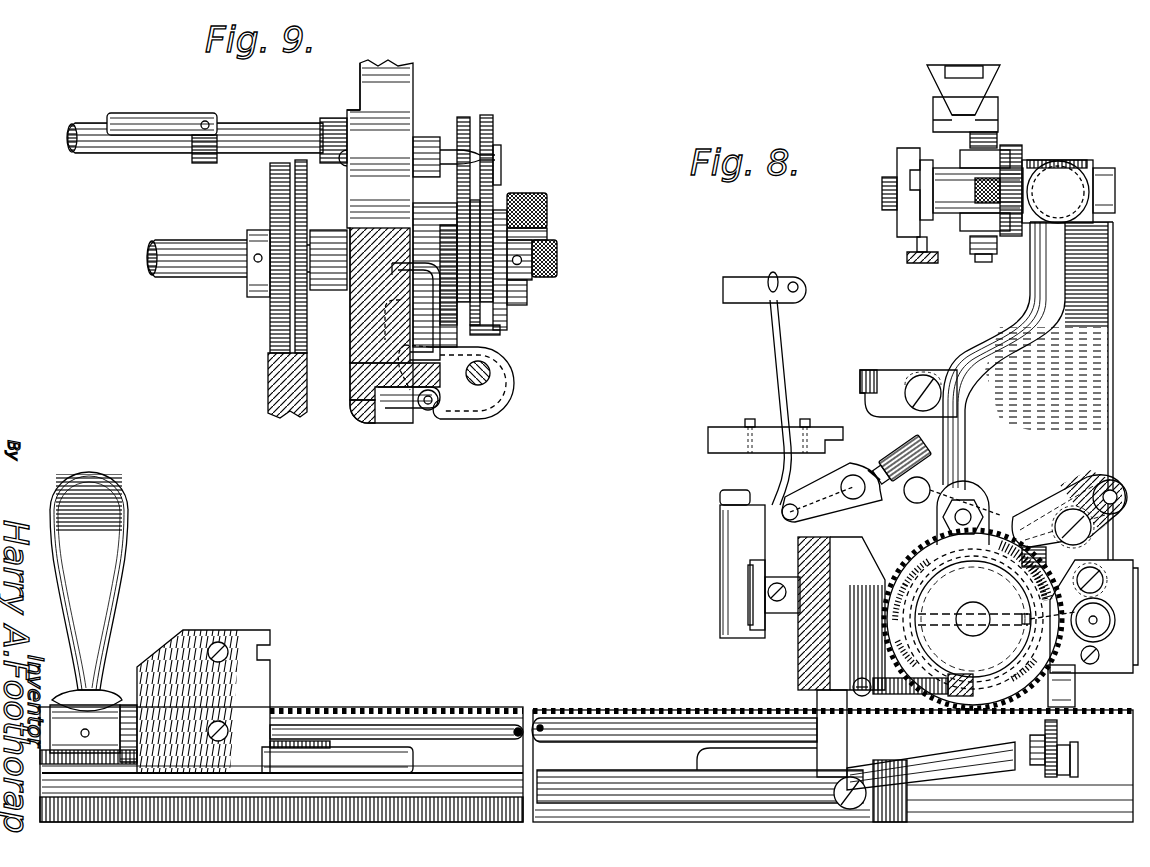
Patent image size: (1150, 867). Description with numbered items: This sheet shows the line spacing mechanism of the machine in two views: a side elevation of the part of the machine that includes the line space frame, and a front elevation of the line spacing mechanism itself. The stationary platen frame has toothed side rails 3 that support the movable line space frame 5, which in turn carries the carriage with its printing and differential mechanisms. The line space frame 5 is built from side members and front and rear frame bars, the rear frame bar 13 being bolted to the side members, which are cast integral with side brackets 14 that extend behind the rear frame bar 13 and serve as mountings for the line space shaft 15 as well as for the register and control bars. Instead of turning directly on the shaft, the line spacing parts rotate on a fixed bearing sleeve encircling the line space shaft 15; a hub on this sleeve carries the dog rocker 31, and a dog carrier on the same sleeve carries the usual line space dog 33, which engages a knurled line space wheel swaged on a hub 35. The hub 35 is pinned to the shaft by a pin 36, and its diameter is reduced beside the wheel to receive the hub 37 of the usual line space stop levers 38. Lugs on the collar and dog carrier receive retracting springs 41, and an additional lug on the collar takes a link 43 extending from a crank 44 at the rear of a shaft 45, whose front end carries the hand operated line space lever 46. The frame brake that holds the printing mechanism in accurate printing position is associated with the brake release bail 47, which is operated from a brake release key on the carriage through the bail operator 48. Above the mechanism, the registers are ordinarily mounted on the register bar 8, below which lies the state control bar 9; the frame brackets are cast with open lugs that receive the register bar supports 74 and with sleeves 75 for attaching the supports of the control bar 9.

In FIG. 9, the side rail 3 is at (268, 392).
In FIG. 9, the line space frame 5 is at (390, 395).
In FIG. 8, the line space frame 5 is at (300, 745).
In FIG. 8, the register bar 8 is at (985, 76).
In FIG. 8, the state control bar 9 is at (897, 166).
In FIG. 8, the rear frame bar 13 is at (832, 560).
In FIG. 9, the side bracket 14 is at (413, 72).
In FIG. 8, the side bracket 14 is at (986, 391).
In FIG. 9, the line space shaft 15 is at (182, 270).
In FIG. 8, the line space shaft 15 is at (968, 610).
In FIG. 9, the dog rocker 31 is at (462, 117).
In FIG. 8, the dog rocker 31 is at (1072, 487).
In FIG. 9, the line space dog 33 is at (490, 115).
In FIG. 8, the line space dog 33 is at (1102, 450).
In FIG. 9, the hub 35 is at (520, 245).
In FIG. 8, the hub 35 is at (945, 585).
In FIG. 9, the pin 36 is at (522, 265).
In FIG. 8, the pin 36 is at (1022, 626).
In FIG. 8, the hub of the line space stop levers 37 is at (905, 588).
In FIG. 8, the line space stop lever 38 is at (1094, 616).
In FIG. 8, the retracting spring 41 is at (900, 700).
In FIG. 9, the link 43 is at (365, 358).
In FIG. 8, the link 43 is at (1076, 692).
In FIG. 8, the crank 44 is at (1045, 770).
In FIG. 9, the shaft 45 is at (494, 377).
In FIG. 8, the shaft 45 is at (455, 725).
In FIG. 8, the hand operated line space lever 46 is at (118, 552).
In FIG. 9, the brake release bail 47 is at (160, 108).
In FIG. 8, the brake release bail 47 is at (908, 497).
In FIG. 8, the bail operator 48 is at (900, 456).
In FIG. 8, the register bar support 74 is at (985, 255).
In FIG. 8, the sleeve 75 is at (1075, 162).